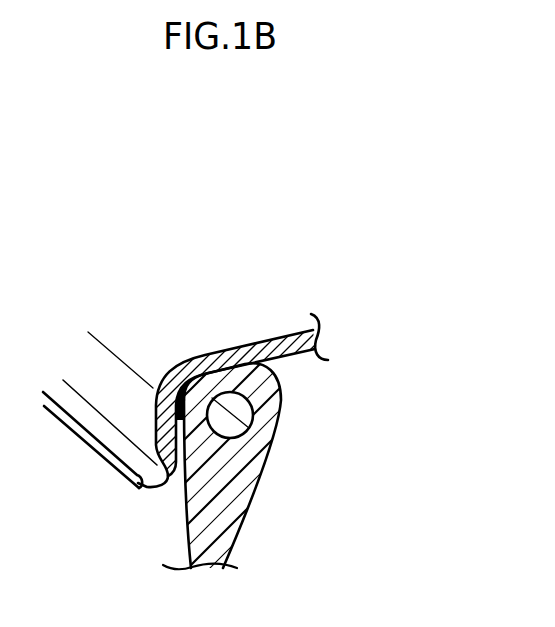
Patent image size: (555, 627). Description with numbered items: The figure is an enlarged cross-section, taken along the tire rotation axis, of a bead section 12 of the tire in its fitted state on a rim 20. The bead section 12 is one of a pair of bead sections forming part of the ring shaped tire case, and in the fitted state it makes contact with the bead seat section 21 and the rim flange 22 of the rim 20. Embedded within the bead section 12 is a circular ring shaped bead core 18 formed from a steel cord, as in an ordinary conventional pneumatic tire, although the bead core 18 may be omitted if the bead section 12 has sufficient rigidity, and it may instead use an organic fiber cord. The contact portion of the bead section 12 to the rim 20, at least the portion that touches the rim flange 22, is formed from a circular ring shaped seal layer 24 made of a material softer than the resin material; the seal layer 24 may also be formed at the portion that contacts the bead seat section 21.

The bead section 12 is at (268, 452).
The bead core 18 is at (256, 427).
The rim 20 is at (233, 345).
The bead seat section 21 is at (288, 354).
The rim flange 22 is at (165, 458).
The seal layer 24 is at (184, 380).